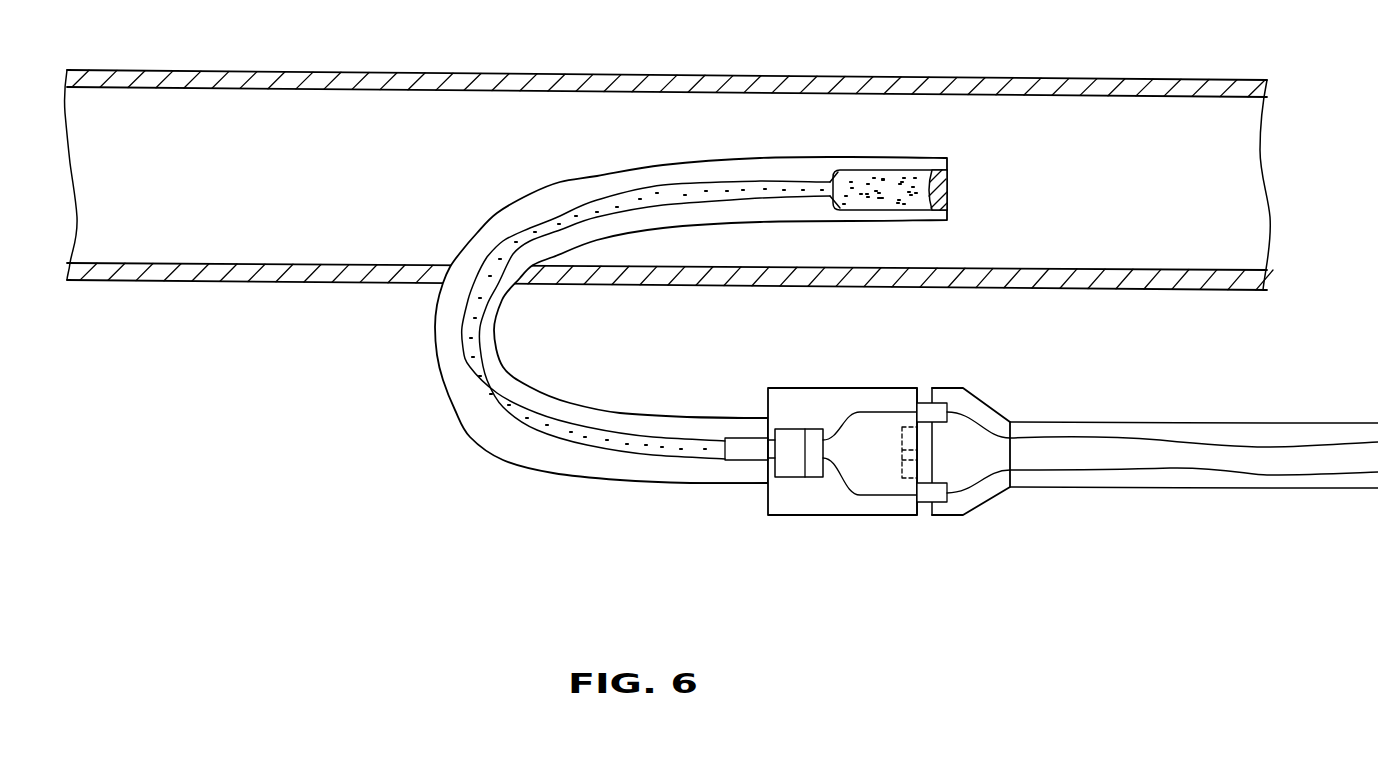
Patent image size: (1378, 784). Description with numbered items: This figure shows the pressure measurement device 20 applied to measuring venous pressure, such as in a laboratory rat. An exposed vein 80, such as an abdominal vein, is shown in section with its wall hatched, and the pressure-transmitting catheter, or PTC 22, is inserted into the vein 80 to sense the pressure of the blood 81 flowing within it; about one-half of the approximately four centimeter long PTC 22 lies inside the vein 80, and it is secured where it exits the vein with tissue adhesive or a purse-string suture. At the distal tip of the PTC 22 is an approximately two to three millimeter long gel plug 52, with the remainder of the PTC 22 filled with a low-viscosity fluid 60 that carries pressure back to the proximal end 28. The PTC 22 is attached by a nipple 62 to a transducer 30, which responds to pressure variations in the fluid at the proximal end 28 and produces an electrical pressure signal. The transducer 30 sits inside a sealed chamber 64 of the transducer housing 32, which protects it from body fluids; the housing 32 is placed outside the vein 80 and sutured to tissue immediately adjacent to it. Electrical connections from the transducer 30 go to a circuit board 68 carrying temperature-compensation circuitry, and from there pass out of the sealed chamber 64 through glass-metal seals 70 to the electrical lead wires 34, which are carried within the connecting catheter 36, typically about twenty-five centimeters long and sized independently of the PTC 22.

The pressure measurement device 20 is at (1031, 493).
The PTC 22 is at (727, 298).
The proximal end 28 is at (722, 462).
The transducer 30 is at (795, 429).
The transducer housing 32 is at (858, 472).
The electrical lead wires 34 is at (1057, 440).
The connecting catheter 36 is at (1132, 488).
The gel plug 52 is at (947, 196).
The low-viscosity fluid 60 is at (790, 190).
The nipple 62 is at (746, 462).
The sealed chamber 64 is at (798, 503).
The circuit board 68 is at (921, 509).
The glass-metal seals 70 is at (935, 405).
The vein 80 is at (497, 73).
The blood 81 is at (262, 120).